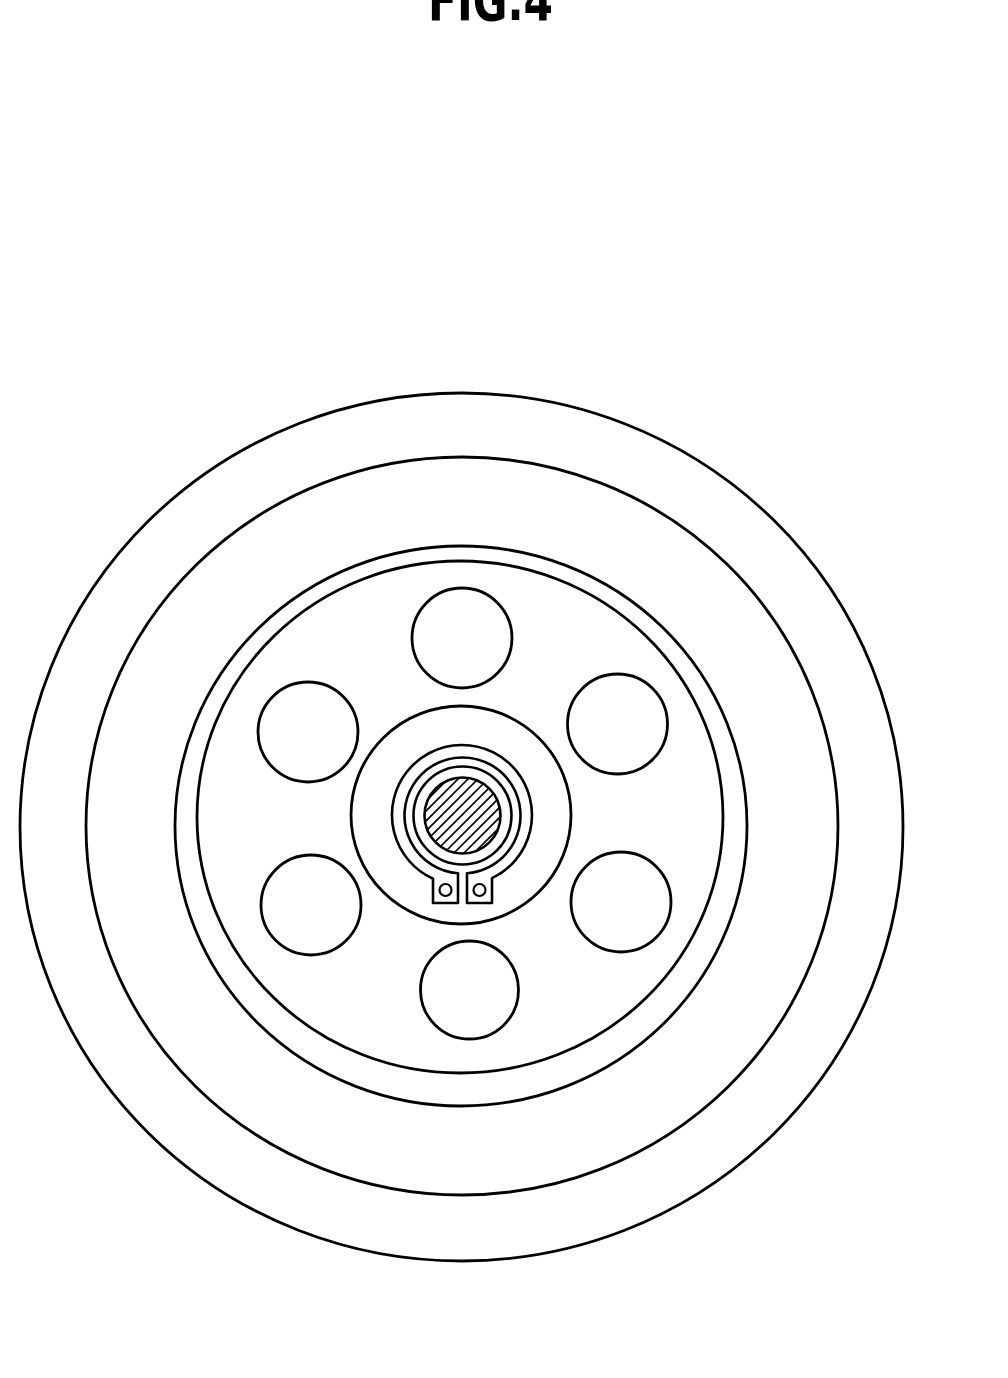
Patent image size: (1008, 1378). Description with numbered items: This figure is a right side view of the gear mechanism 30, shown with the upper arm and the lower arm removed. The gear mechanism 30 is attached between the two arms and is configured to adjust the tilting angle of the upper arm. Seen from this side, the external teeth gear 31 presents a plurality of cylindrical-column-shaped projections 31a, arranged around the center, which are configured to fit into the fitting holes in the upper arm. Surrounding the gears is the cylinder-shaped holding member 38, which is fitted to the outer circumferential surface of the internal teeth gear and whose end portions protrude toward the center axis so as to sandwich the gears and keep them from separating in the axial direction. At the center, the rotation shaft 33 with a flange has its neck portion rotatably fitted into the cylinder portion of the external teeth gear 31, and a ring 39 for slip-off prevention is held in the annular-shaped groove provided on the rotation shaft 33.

The gear mechanism 30 is at (775, 497).
The holding member 38 is at (585, 438).
The external teeth gear 31 is at (645, 969).
The cylindrical-column-shaped projections 31a is at (492, 991).
The rotation shaft 33 is at (508, 842).
The ring 39 is at (433, 897).